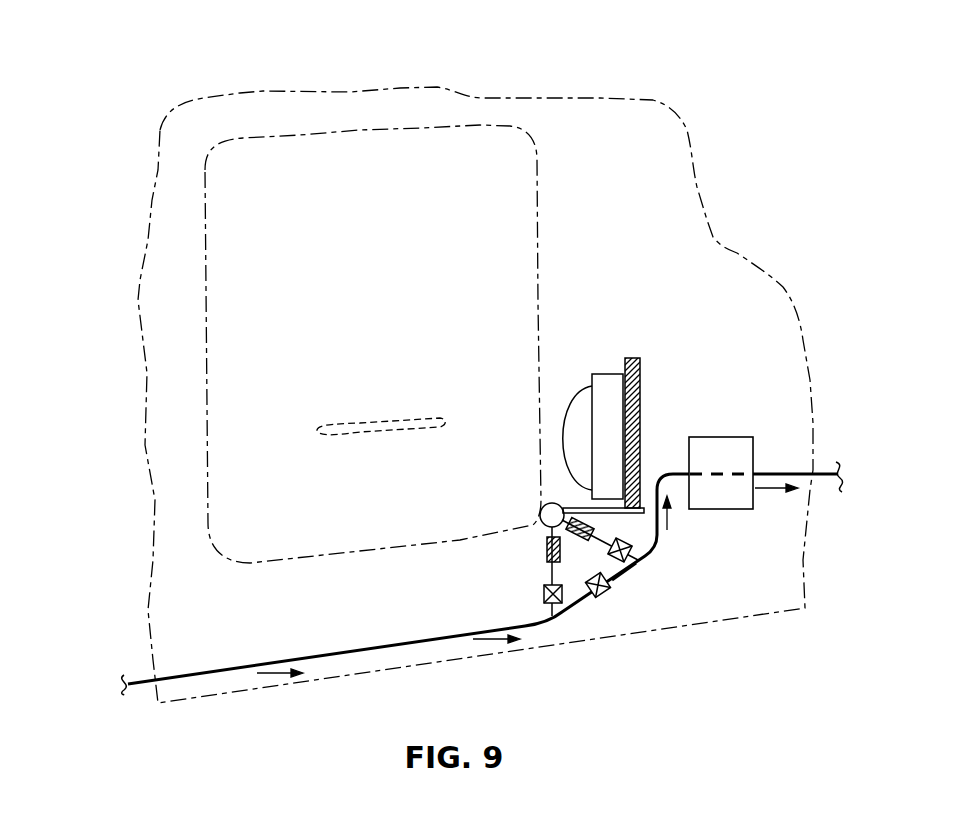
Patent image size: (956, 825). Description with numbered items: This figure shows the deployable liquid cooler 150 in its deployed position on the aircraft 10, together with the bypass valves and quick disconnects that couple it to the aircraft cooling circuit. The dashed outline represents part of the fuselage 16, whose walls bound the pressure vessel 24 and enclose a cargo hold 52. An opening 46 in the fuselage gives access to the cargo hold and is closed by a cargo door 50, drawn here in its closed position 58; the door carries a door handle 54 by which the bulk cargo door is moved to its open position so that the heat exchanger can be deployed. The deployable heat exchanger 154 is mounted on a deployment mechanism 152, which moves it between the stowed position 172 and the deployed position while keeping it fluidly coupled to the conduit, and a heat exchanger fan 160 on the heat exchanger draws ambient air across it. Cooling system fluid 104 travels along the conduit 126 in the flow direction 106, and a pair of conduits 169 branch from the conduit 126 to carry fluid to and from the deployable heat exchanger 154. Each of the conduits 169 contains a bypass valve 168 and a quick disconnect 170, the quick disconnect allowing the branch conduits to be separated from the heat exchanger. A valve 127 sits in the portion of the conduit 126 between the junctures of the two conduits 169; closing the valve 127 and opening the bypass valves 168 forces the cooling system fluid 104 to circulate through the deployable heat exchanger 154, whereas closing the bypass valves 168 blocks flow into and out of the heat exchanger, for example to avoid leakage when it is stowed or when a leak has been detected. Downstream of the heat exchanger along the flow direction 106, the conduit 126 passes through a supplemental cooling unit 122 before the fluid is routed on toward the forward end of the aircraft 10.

The aircraft 10 is at (263, 90).
The fuselage 16 is at (437, 87).
The pressure vessel 24 is at (475, 395).
The cargo hold 52 is at (687, 150).
The opening 46 is at (207, 367).
The cargo door 50 is at (309, 344).
The closed position 58 is at (207, 430).
The door handle 54 is at (343, 438).
The cooling system fluid 104 is at (347, 653).
The flow direction 106 is at (273, 675).
The supplemental cooling unit 122 is at (712, 437).
The deployable liquid cooler 150 is at (641, 380).
The stowed position 172 is at (632, 358).
The deployable heat exchanger 154 is at (606, 374).
The heat exchanger fan 160 is at (574, 392).
The deployment mechanism 152 is at (540, 517).
The conduits 169 is at (550, 567).
The quick disconnect 170 is at (547, 538).
The bypass valve 168 is at (544, 594).
The conduit 126 is at (624, 576).
The valve 127 is at (603, 594).